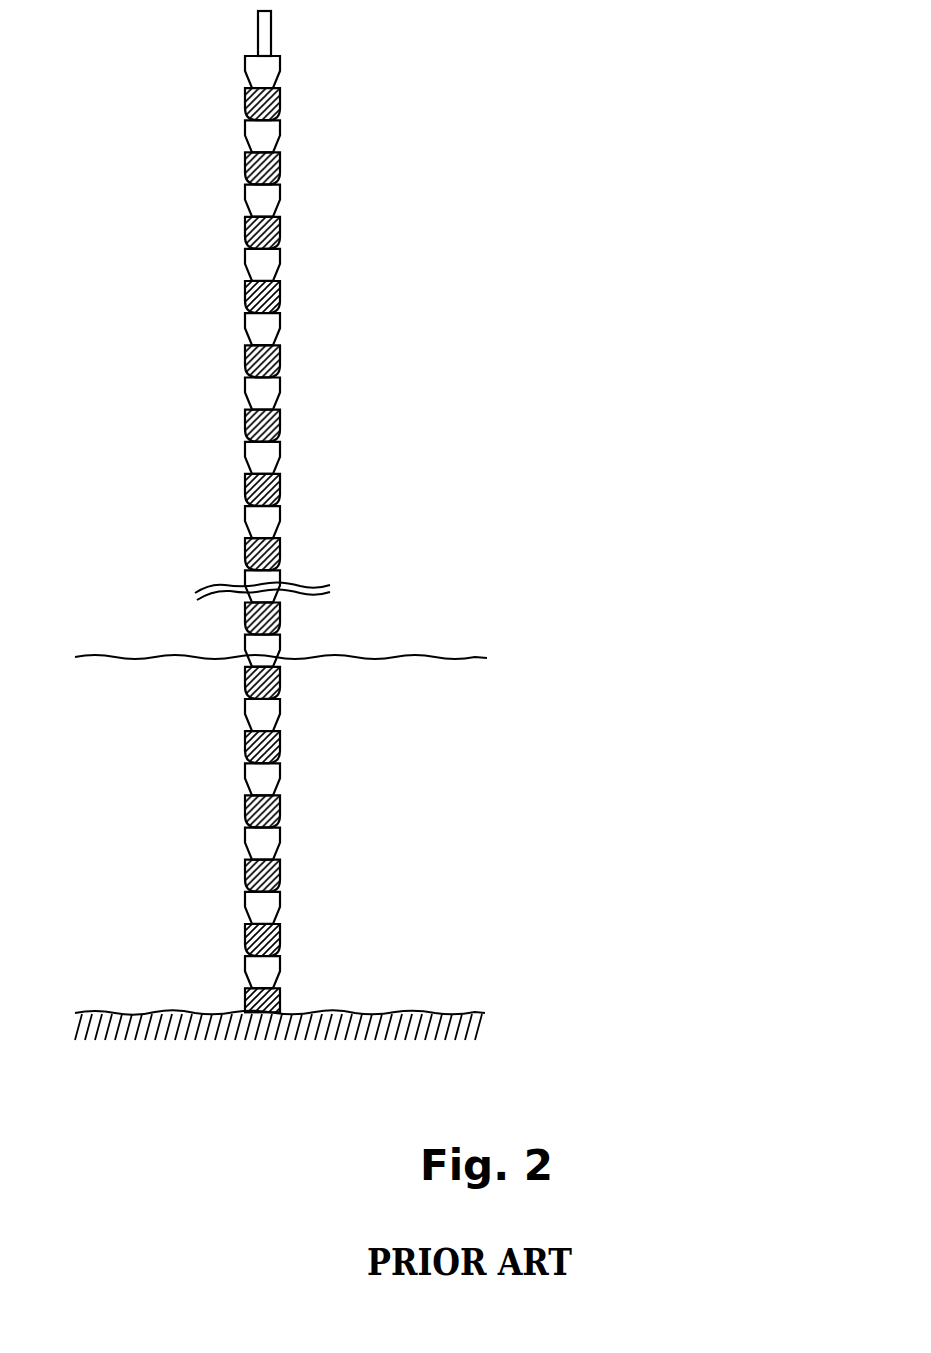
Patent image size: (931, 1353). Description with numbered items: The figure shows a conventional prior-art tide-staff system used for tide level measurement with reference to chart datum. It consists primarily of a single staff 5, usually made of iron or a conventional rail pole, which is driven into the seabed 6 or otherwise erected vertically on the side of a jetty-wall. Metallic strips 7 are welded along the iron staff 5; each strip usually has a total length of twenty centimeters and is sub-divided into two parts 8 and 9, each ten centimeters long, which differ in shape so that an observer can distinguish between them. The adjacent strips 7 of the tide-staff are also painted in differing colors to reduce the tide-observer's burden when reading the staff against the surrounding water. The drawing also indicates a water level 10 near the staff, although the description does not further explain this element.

The staff 5 is at (290, 24).
The seabed 6 is at (357, 998).
The metallic strips 7 is at (288, 88).
The first part of strip 8 is at (298, 261).
The second part of strip 9 is at (232, 272).
The water surface 10 is at (372, 645).